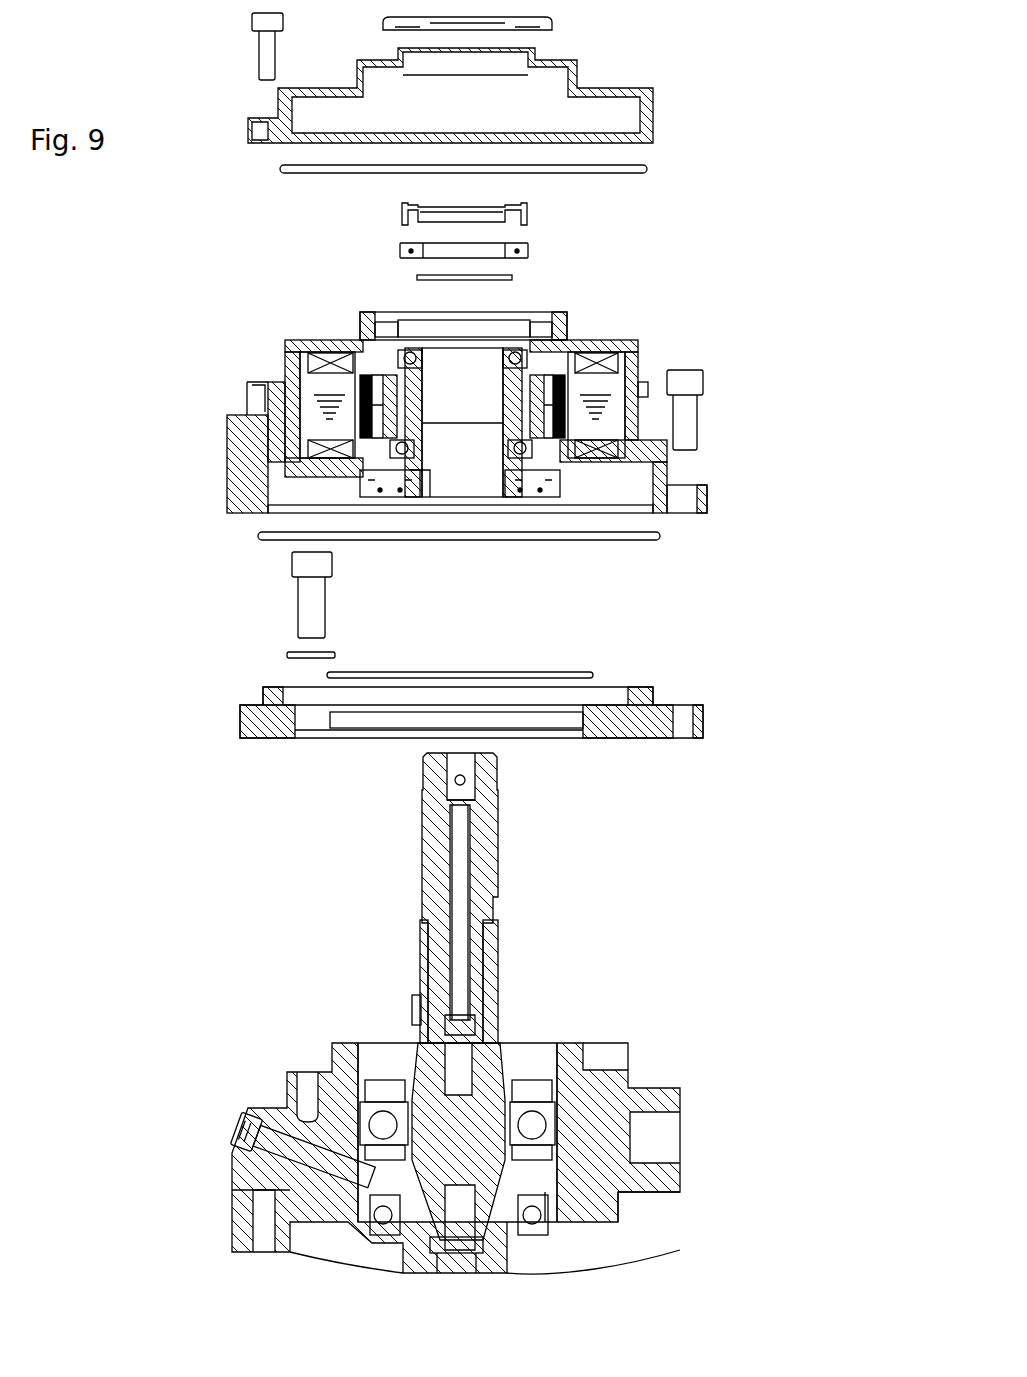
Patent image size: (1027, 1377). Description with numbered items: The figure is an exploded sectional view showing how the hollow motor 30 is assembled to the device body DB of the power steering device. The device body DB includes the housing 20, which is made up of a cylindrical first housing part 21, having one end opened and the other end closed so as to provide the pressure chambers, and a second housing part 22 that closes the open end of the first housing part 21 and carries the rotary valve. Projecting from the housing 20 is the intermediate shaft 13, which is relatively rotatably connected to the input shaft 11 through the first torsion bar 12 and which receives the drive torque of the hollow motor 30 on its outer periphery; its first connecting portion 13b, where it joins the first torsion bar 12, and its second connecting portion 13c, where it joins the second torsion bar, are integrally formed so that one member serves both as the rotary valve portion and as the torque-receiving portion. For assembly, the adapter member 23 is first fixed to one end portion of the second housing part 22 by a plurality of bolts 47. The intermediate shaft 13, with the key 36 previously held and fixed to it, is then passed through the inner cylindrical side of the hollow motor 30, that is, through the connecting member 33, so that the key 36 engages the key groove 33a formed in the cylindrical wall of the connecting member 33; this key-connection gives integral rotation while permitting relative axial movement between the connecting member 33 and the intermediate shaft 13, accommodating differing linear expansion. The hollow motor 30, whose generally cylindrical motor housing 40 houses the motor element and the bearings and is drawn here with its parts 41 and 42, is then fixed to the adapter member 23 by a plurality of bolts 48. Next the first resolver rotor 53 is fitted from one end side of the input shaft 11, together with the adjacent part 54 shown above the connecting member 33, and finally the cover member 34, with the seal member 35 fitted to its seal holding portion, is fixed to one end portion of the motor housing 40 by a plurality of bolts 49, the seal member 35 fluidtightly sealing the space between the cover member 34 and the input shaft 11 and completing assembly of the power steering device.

The bolts 49 is at (263, 53).
The cover member 34 is at (655, 98).
The seal member 35 is at (402, 215).
The first resolver rotor 53 is at (528, 250).
The shim plate 54 is at (553, 323).
The connecting member 33 is at (595, 343).
The key groove 33a is at (424, 472).
The hollow motor 30 is at (414, 452).
The bolts 48 is at (690, 420).
The bracket 42 is at (645, 465).
The base plate 41 is at (707, 499).
The motor housing 40 is at (524, 464).
The bolts 47 is at (307, 602).
The adapter member 23 is at (660, 703).
The input shaft 11 is at (463, 898).
The first torsion bar 12 is at (457, 893).
The first connecting portion 13b is at (497, 953).
The intermediate shaft 13 is at (488, 1040).
The key 36 is at (418, 1010).
The device body DB is at (655, 1070).
The second housing part 22 is at (668, 1100).
The first housing part 21 is at (640, 1198).
The housing 20 is at (522, 1125).
The second connecting portion 13c is at (493, 1270).